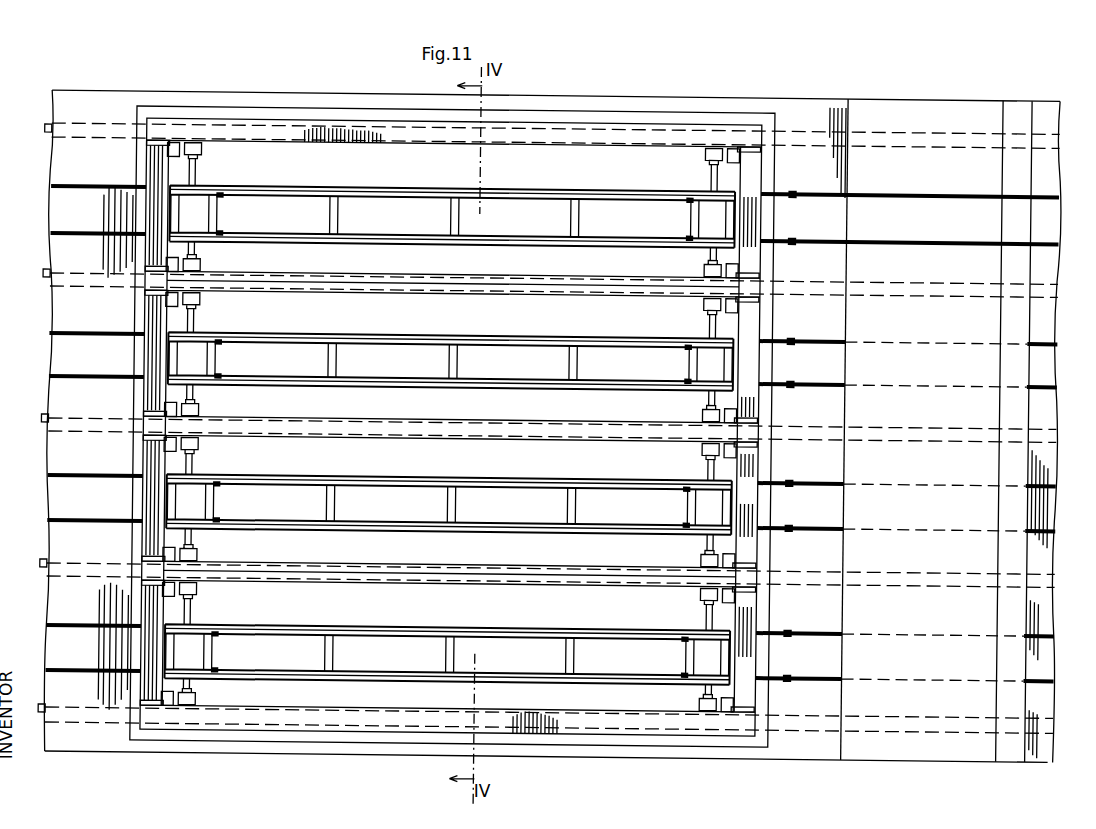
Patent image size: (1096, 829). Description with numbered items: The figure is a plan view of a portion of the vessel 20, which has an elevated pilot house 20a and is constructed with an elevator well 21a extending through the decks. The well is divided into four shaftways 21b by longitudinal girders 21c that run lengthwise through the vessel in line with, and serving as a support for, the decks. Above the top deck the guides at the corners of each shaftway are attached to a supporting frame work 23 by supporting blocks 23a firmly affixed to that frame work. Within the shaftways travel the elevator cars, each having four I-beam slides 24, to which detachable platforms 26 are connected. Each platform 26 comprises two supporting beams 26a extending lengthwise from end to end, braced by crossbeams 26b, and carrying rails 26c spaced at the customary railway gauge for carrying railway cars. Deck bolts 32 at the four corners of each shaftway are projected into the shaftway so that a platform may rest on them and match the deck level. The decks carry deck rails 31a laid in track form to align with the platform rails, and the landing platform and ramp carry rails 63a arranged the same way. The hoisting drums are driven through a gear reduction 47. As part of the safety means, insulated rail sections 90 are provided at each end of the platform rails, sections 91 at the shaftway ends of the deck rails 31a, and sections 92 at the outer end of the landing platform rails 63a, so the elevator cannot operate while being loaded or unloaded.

The vessel 20 is at (588, 93).
The pilot house 20a is at (913, 100).
The elevator well 21a is at (468, 144).
The shaftway 21b is at (583, 295).
The longitudinal girder 21c is at (296, 128).
The supporting frame work 23 is at (220, 106).
The supporting block 23a is at (150, 292).
The slide 24 is at (204, 148).
The detachable platform 26 is at (381, 179).
The supporting beam 26a is at (588, 231).
The crossbeam 26b is at (196, 204).
The rail 26c is at (495, 240).
The deck rail 31a is at (830, 233).
The deck bolt 32 is at (172, 158).
The gear reduction 47 is at (198, 171).
The landing platform rail 63a is at (70, 233).
The rail section 90 is at (222, 232).
The rail section 91 is at (784, 233).
The rail section 92 is at (120, 233).